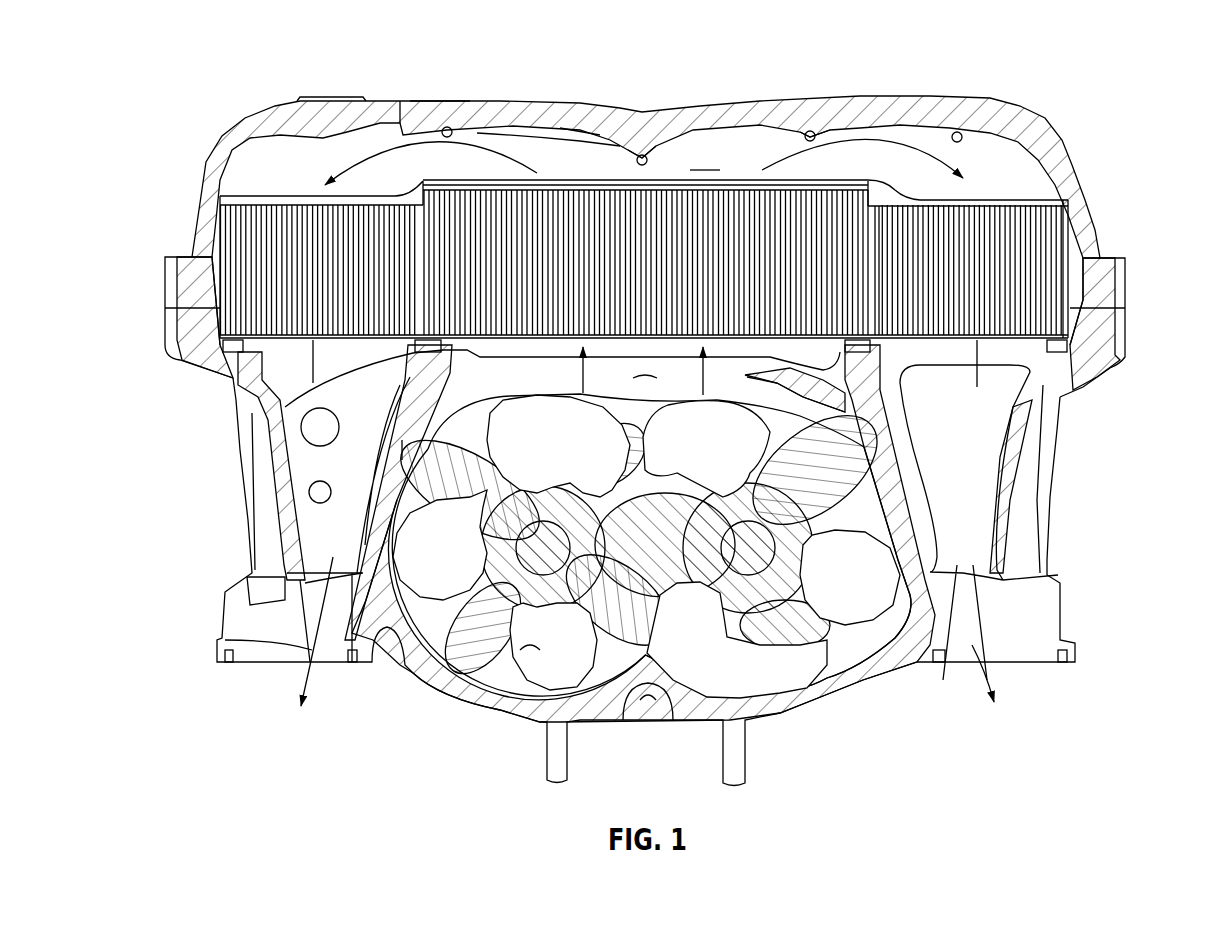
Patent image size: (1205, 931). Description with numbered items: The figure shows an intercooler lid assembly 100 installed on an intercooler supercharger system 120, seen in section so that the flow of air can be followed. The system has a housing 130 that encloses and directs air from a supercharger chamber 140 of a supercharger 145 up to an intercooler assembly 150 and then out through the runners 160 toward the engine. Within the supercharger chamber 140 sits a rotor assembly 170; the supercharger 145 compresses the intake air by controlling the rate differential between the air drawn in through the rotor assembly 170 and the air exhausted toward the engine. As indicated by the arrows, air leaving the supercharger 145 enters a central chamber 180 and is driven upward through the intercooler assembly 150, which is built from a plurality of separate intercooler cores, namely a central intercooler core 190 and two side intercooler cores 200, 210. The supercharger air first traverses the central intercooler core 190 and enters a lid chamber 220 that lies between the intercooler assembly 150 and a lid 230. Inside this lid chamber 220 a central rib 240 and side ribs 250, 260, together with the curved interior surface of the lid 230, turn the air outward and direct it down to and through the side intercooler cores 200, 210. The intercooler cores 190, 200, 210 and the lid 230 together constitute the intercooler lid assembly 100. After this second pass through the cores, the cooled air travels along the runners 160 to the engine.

The intercooler lid assembly 100 is at (351, 74).
The intercooler supercharger system 120 is at (146, 301).
The housing 130 is at (1079, 388).
The supercharger chamber 140 is at (735, 680).
The supercharger 145 is at (650, 686).
The intercooler assembly 150 is at (1079, 282).
The runners 160 is at (330, 618).
The rotor assembly 170 is at (528, 636).
The central chamber 180 is at (280, 407).
The central intercooler core 190 is at (706, 167).
The side intercooler core 200 is at (258, 188).
The side intercooler core 210 is at (1038, 160).
The lid chamber 220 is at (585, 160).
The lid 230 is at (1023, 102).
The central rib 240 is at (644, 152).
The side rib 250 is at (447, 127).
The side rib 260 is at (811, 133).